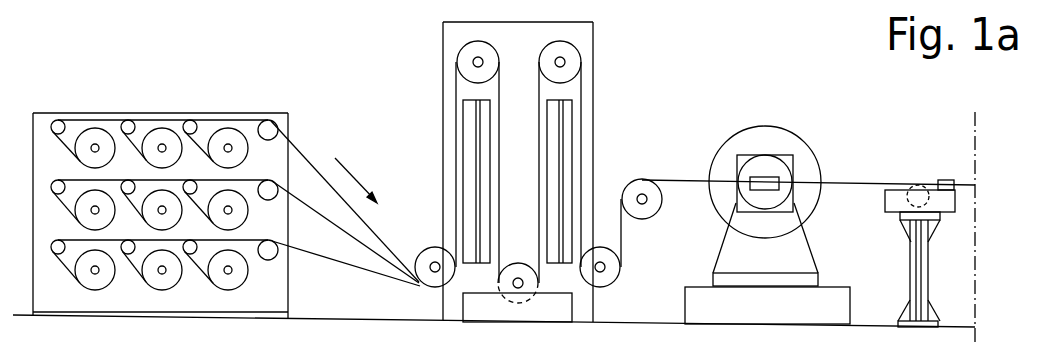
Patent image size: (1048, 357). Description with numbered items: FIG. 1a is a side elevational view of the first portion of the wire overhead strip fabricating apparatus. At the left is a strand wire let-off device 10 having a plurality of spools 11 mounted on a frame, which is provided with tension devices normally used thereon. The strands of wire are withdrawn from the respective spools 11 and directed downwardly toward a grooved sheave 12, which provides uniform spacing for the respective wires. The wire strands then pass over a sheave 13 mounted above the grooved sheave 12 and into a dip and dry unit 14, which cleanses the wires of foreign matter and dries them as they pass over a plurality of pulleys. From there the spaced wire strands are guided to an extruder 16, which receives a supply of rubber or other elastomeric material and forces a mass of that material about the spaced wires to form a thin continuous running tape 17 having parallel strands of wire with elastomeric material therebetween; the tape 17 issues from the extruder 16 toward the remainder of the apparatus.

The strand wire let-off device 10 is at (216, 82).
The spools 11 is at (157, 138).
The grooved sheave 12 is at (428, 278).
The sheave 13 is at (468, 55).
The dip and dry unit 14 is at (541, 172).
The extruder 16 is at (821, 150).
The tape 17 is at (966, 182).